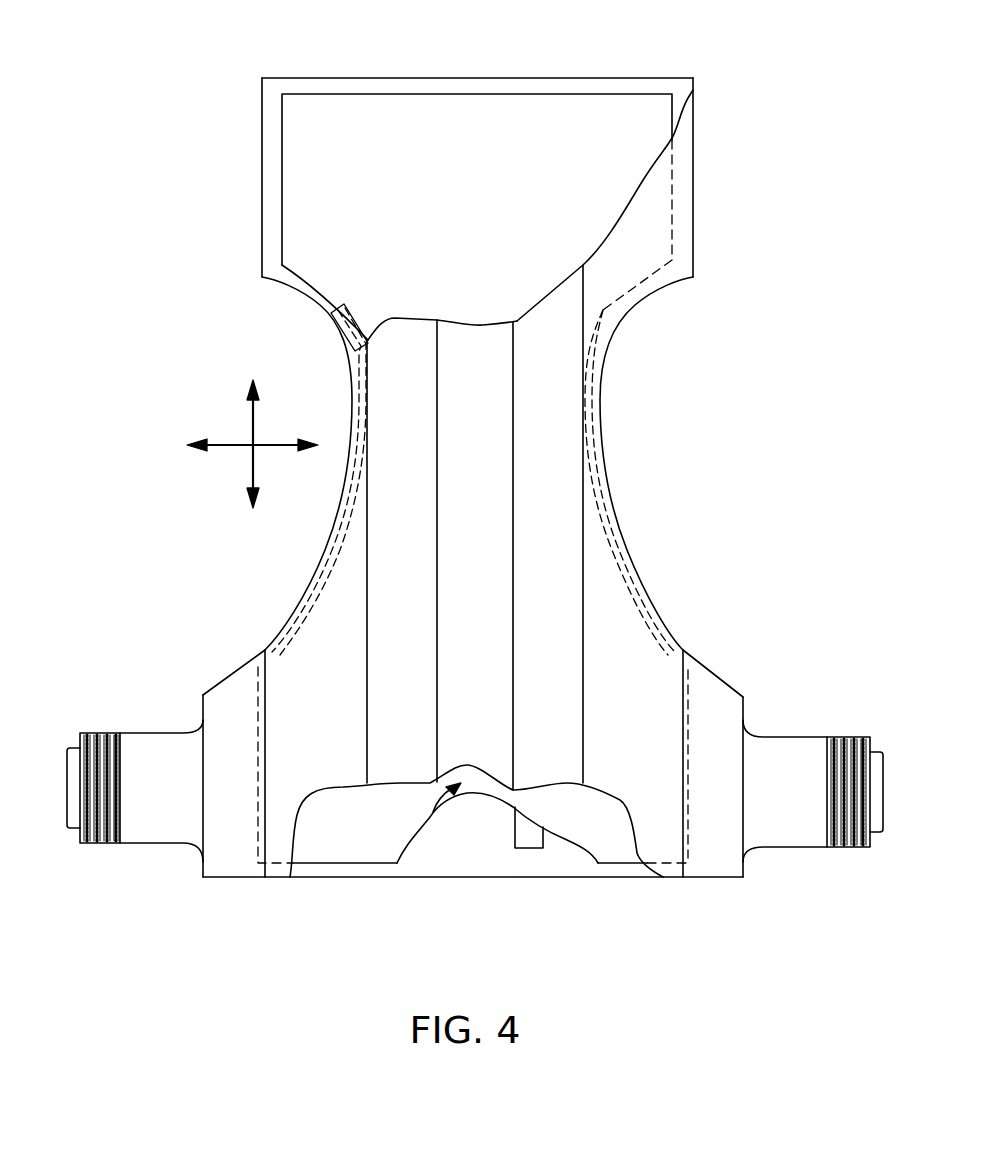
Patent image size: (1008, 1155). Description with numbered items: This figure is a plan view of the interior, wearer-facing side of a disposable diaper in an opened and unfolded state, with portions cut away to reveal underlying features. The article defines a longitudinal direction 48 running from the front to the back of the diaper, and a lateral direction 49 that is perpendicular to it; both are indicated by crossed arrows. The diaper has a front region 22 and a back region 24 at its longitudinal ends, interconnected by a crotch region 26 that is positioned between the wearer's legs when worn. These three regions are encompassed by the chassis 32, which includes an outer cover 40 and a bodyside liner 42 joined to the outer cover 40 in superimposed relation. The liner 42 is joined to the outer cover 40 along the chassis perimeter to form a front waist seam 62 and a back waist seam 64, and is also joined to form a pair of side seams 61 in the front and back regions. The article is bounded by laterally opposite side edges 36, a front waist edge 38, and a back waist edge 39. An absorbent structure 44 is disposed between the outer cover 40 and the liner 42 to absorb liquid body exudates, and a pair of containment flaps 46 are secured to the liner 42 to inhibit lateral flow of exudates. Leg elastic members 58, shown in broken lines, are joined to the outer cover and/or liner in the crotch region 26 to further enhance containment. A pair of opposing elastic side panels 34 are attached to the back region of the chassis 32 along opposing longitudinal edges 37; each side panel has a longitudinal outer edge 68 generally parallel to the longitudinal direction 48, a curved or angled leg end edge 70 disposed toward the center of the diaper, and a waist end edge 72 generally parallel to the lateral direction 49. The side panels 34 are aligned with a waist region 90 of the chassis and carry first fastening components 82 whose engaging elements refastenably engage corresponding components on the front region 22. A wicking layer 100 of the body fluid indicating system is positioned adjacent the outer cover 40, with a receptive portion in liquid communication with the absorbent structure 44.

The front region 22 is at (457, 214).
The back region 24 is at (457, 719).
The crotch region 26 is at (457, 424).
The chassis 32 is at (373, 568).
The elastic side panels 34 is at (237, 860).
The side edges 36 is at (337, 522).
The longitudinal edges 37 is at (265, 762).
The front waist edge 38 is at (318, 78).
The back waist edge 39 is at (340, 880).
The outer cover 40 is at (455, 868).
The bodyside liner 42 is at (619, 766).
The absorbent structure 44 is at (605, 110).
The containment flaps 46 is at (380, 643).
The longitudinal direction 48 is at (255, 417).
The lateral direction 49 is at (273, 450).
The leg elastic members 58 is at (358, 312).
The side seams 61 is at (242, 670).
The front waist seam 62 is at (497, 78).
The back waist seam 64 is at (557, 872).
The longitudinal outer edge 68 is at (203, 808).
The leg end edge 70 is at (227, 680).
The waist end edges 72 is at (708, 880).
The first fastening components 82 is at (108, 735).
The waist region 90 is at (433, 817).
The wicking layer 100 is at (527, 837).